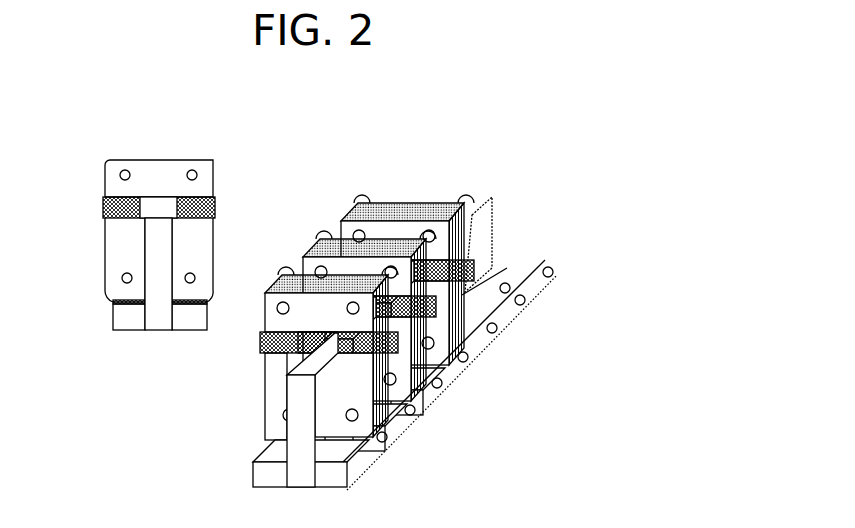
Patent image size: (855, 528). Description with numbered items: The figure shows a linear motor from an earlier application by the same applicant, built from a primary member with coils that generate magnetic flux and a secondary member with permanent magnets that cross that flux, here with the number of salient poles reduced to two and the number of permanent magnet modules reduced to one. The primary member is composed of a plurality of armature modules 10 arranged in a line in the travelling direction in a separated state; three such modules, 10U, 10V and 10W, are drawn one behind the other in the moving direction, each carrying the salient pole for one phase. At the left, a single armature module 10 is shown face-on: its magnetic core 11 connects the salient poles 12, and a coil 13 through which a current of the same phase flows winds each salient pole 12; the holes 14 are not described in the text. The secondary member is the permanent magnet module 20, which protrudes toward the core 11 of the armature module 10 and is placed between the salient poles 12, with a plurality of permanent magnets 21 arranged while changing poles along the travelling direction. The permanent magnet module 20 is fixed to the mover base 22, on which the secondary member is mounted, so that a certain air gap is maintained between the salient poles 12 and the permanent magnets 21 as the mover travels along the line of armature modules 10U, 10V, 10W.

The armature module 10 is at (173, 228).
The magnetic core 11 is at (181, 205).
The salient pole 12 is at (120, 257).
The coil 13 is at (213, 195).
The mounting hole 14 is at (197, 278).
The permanent magnet module 20 is at (298, 400).
The permanent magnet 21 is at (484, 232).
The mover base 22 is at (257, 459).
The armature module 10U is at (320, 377).
The armature module 10V is at (445, 362).
The armature module 10W is at (492, 350).